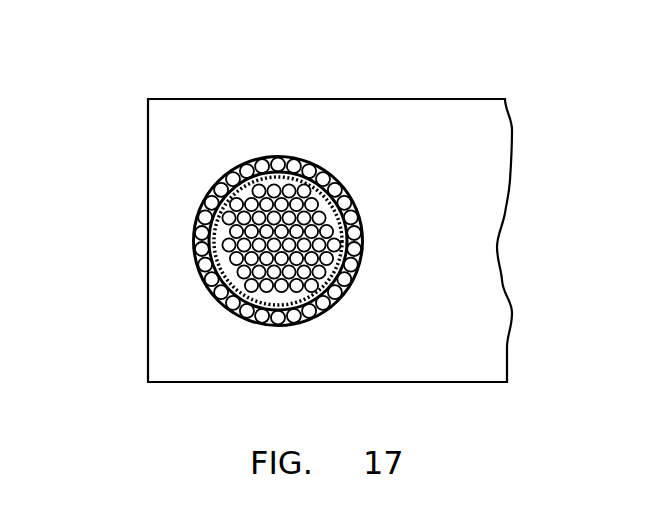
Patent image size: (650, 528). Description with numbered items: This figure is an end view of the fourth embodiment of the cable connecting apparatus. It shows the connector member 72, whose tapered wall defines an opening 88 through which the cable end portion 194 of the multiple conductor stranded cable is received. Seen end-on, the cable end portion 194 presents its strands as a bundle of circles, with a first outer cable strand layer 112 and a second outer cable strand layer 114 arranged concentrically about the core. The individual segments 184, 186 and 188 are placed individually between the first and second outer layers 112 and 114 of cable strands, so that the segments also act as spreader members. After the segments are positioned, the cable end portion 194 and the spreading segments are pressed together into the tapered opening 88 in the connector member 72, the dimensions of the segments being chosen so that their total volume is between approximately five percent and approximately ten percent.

The connector member 72 is at (165, 242).
The opening 88 is at (280, 210).
The first outer cable strand layer 112 is at (307, 168).
The second outer cable strand layer 114 is at (281, 166).
The segment 184 is at (347, 203).
The segment 186 is at (232, 172).
The segment 188 is at (248, 318).
The cable end portion 194 is at (258, 165).